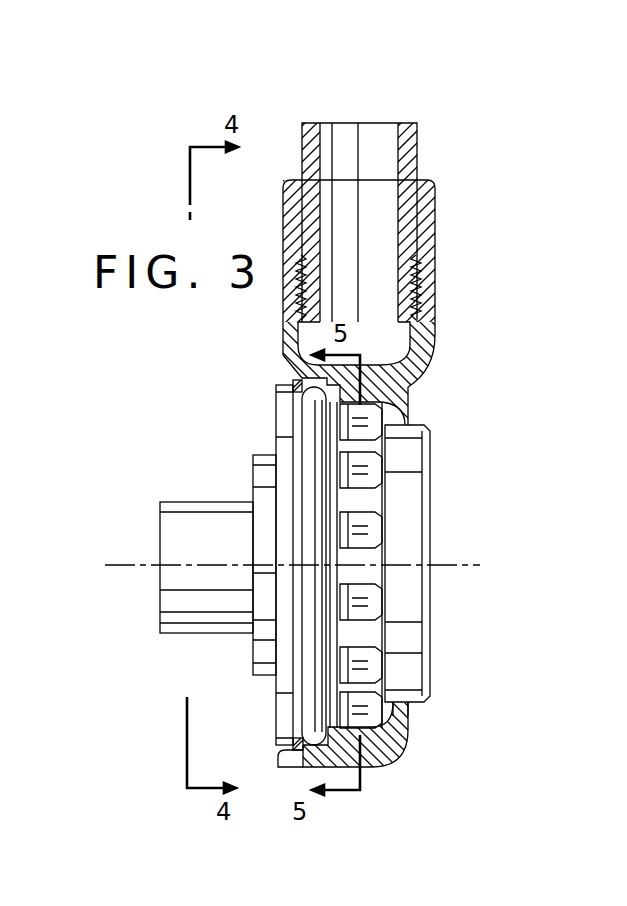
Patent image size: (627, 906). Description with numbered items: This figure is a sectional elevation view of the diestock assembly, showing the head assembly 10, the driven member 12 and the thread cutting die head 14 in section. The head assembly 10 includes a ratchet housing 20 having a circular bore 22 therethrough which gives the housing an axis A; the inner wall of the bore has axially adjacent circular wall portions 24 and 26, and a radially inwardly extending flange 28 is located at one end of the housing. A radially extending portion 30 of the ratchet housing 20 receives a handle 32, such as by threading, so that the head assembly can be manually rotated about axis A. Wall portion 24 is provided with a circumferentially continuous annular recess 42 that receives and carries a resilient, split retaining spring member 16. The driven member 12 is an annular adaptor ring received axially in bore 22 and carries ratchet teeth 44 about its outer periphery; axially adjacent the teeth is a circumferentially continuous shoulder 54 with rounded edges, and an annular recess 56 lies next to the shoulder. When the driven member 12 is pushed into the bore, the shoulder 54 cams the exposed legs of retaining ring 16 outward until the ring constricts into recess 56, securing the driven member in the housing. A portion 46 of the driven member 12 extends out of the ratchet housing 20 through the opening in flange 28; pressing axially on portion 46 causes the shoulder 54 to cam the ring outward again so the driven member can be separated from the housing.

The head assembly 10 is at (452, 313).
The driven member 12 is at (442, 516).
The thread cutting die head 14 is at (200, 492).
The retaining spring member 16 is at (297, 380).
The ratchet housing 20 is at (375, 758).
The circular bore 22 is at (385, 724).
The circular wall portion 24 is at (296, 740).
The circular wall portion 26 is at (365, 740).
The flange 28 is at (405, 715).
The radially extending portion 30 is at (423, 215).
The handle 32 is at (407, 165).
The annular recess 42 is at (282, 762).
The ratchet teeth 44 is at (356, 528).
The portion 46 is at (407, 637).
The shoulder 54 is at (308, 417).
The annular recess 56 is at (293, 438).
The axis A is at (445, 565).